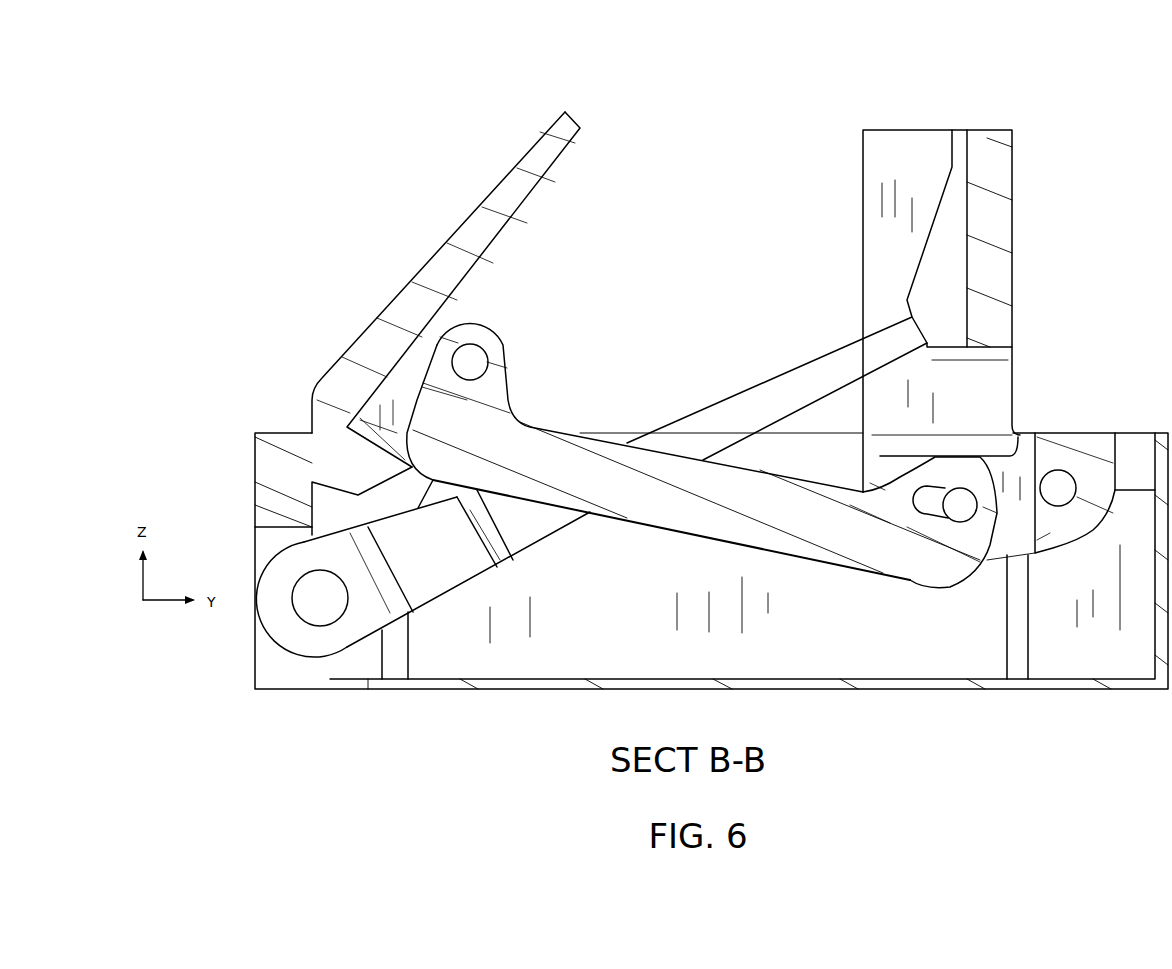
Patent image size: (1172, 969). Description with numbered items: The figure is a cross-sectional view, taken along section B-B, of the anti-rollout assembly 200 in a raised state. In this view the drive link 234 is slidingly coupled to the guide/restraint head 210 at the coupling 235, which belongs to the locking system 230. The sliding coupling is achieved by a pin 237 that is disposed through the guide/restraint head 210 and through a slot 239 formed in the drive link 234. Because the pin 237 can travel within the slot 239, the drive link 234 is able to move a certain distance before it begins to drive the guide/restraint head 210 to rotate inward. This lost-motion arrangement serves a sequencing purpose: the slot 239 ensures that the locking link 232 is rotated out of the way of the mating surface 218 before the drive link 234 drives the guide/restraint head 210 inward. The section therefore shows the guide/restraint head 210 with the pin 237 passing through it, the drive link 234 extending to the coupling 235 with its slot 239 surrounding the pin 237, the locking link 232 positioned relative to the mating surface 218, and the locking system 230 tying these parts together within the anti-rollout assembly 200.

The anti-rollout assembly 200 is at (282, 166).
The guide/restraint head 210 is at (990, 140).
The mating surface 218 is at (906, 303).
The locking system 230 is at (742, 338).
The locking link 232 is at (287, 587).
The drive link 234 is at (720, 520).
The coupling 235 is at (950, 522).
The pin 237 is at (957, 510).
The slot 239 is at (912, 502).